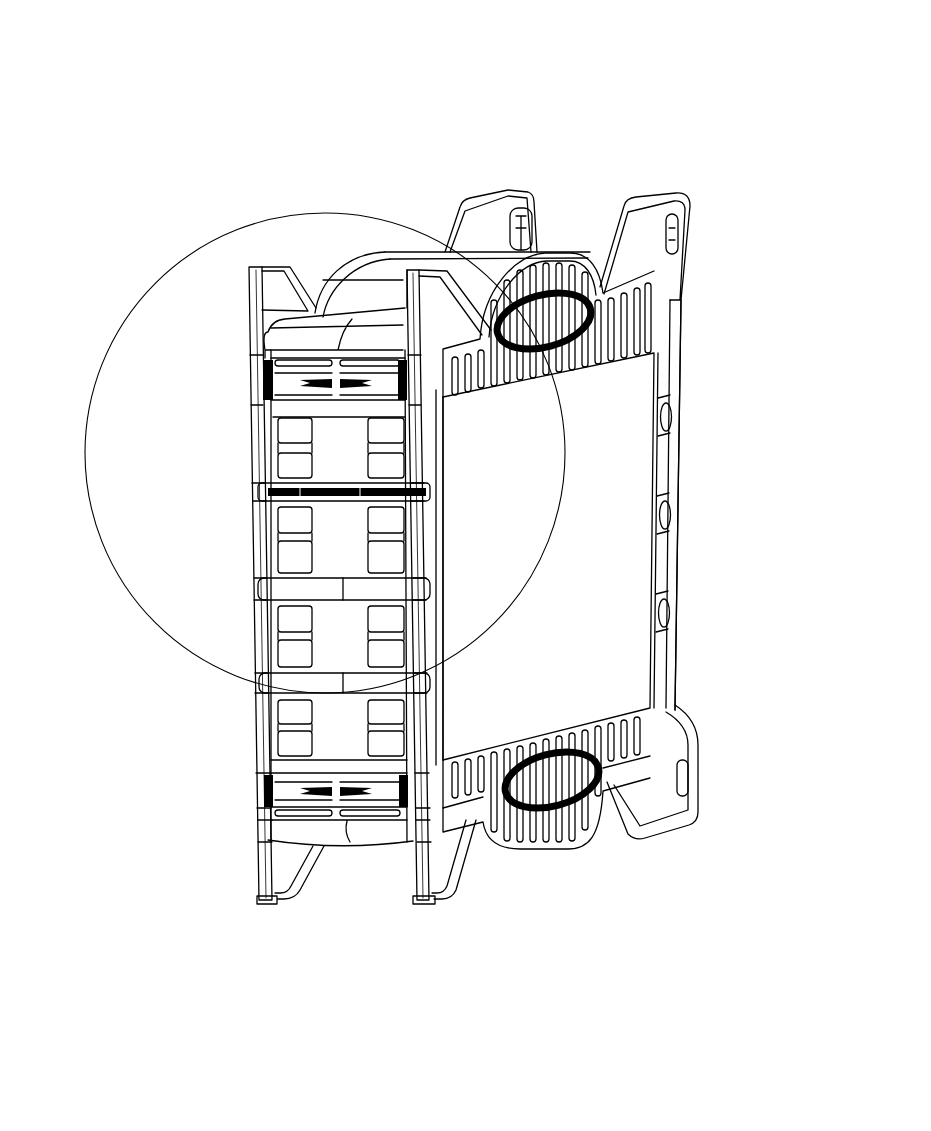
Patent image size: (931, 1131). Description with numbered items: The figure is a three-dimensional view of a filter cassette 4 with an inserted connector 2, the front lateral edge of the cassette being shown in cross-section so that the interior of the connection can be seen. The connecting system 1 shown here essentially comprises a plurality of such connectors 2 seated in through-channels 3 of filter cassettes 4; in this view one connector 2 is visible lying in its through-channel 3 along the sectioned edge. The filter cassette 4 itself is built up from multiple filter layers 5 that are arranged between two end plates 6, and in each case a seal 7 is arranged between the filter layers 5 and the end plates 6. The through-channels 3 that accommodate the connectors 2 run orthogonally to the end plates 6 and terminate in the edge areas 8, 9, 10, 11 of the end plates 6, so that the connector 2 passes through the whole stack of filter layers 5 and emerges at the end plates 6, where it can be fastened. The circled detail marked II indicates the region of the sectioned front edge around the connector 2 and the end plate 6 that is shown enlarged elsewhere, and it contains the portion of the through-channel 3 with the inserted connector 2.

The connecting system 1 is at (296, 142).
The connector 2 is at (245, 489).
The through-channel 3 is at (290, 493).
The filter cassette 4 is at (574, 222).
The filter layer 5 is at (373, 293).
The end plate 6 is at (277, 307).
The seal 7 is at (337, 287).
The edge area of end plate 8 is at (438, 637).
The edge area of end plate 9 is at (674, 476).
The edge area of end plate 10 is at (617, 315).
The edge area of end plate 11 is at (633, 747).
The detail circle II is at (210, 240).